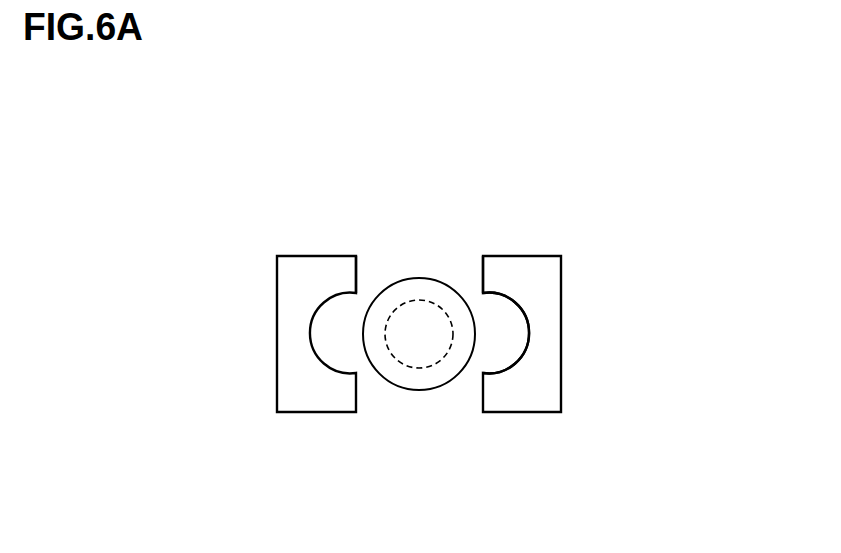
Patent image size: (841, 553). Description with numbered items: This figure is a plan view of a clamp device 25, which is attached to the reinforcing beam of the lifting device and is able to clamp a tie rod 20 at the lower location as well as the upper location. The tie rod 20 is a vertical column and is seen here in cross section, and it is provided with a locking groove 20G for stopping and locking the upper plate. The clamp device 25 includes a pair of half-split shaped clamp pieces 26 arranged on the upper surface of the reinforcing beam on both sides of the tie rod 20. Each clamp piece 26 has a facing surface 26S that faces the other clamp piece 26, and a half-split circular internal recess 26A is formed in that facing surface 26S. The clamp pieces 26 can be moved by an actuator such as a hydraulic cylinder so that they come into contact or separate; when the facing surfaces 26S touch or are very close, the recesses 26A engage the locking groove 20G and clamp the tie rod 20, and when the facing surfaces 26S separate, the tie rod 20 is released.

The clamp device 25 is at (590, 257).
The clamp piece 26 is at (298, 297).
The facing surface 26S is at (357, 272).
The half-split circular internal recess 26A is at (499, 323).
The tie rod 20 is at (414, 277).
The locking groove 20G is at (437, 302).